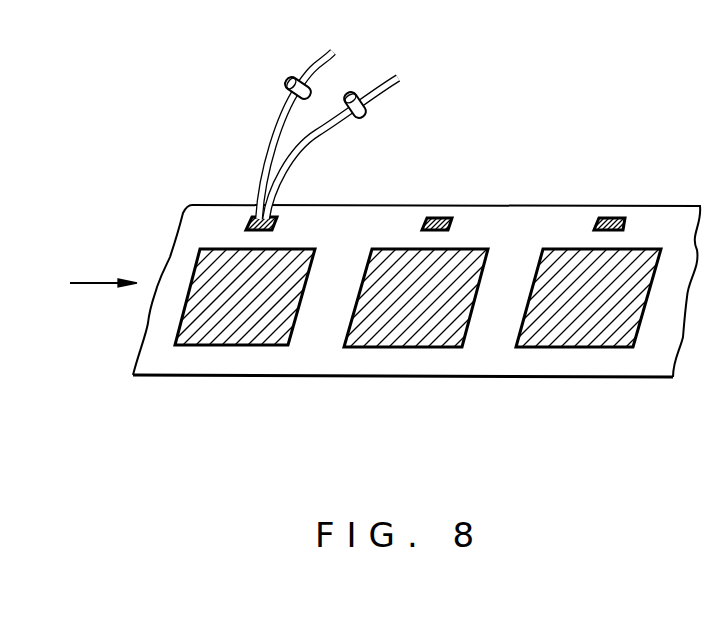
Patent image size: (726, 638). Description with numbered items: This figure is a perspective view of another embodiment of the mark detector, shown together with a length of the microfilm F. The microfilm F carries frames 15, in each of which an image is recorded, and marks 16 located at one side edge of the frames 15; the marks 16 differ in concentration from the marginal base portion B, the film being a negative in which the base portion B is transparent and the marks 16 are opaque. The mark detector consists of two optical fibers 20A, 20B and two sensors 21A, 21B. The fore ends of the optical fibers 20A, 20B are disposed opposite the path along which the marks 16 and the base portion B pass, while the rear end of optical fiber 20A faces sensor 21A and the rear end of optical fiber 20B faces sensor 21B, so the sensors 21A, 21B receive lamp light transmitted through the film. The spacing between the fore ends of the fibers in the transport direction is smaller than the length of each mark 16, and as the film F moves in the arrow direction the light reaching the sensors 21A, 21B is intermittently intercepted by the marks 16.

The microfilm F is at (473, 377).
The base portion B is at (538, 222).
The frames 15 is at (248, 340).
The marks 16 is at (277, 217).
The optical fiber 20A is at (270, 137).
The optical fiber 20B is at (330, 133).
The sensor 21A is at (287, 80).
The sensor 21B is at (367, 110).